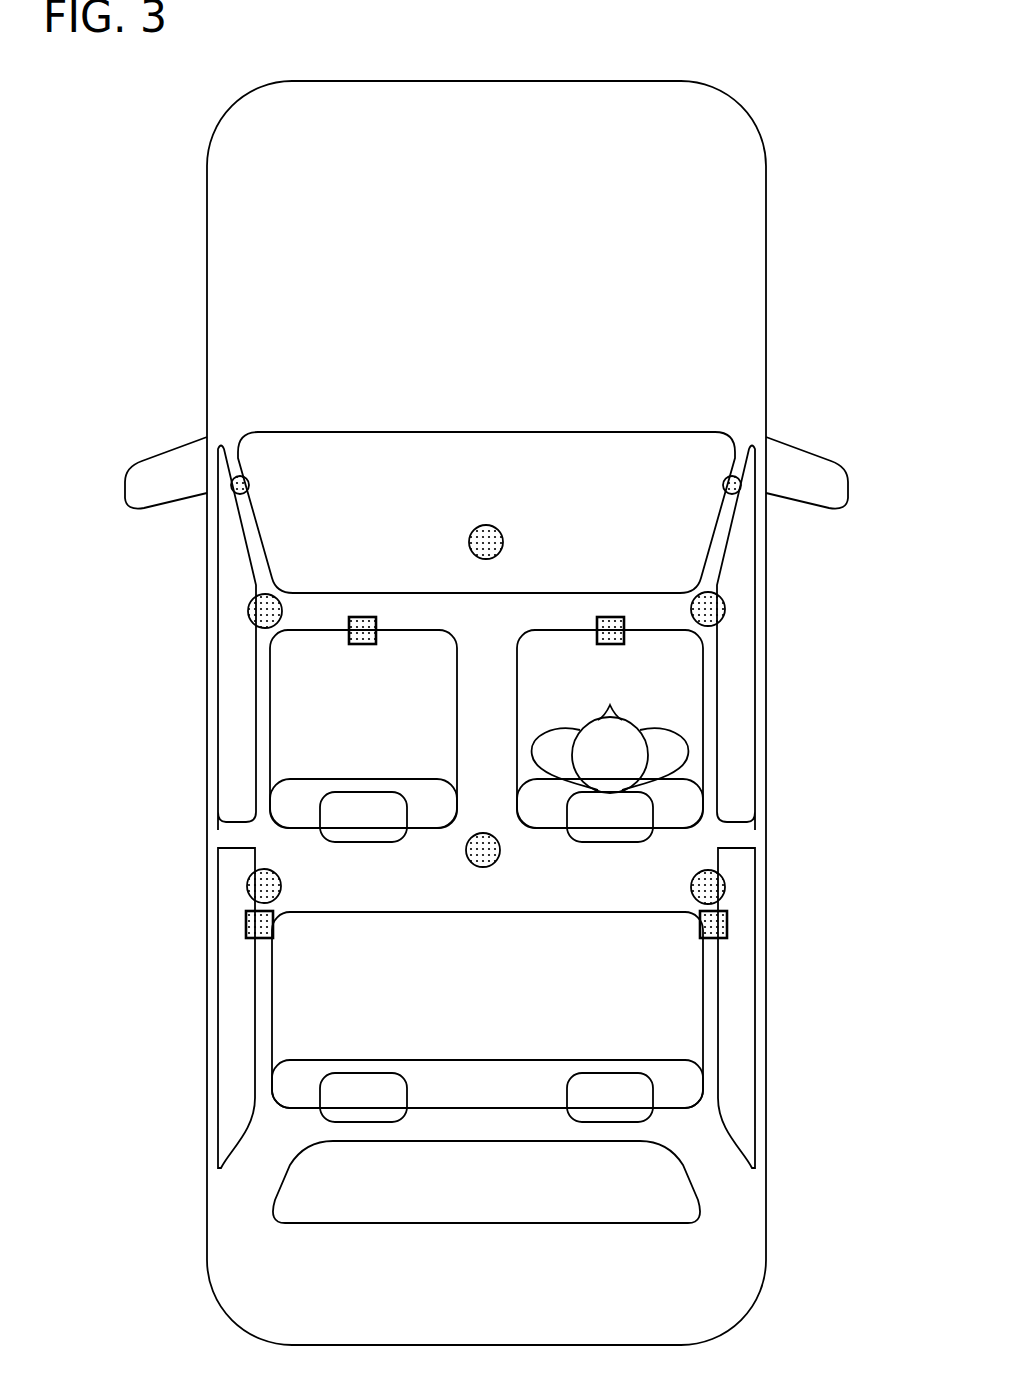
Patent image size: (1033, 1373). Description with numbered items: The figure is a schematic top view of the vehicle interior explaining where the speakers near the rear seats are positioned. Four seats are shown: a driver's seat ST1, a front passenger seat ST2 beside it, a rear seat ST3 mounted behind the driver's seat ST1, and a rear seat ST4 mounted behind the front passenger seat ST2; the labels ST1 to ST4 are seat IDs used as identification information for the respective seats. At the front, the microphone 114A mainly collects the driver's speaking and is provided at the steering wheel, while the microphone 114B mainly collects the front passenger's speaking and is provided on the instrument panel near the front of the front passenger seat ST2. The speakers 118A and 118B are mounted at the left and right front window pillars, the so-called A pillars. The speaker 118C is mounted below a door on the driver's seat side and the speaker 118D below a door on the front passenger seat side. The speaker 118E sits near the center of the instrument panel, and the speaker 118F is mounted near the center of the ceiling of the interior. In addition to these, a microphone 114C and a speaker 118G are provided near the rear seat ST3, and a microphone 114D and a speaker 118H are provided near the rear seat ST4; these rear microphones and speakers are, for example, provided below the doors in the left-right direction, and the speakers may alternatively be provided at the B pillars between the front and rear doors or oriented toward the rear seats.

The microphone 114A is at (604, 617).
The microphone 114B is at (362, 617).
The microphone 114C is at (728, 922).
The microphone 114D is at (246, 920).
The speaker 118A is at (724, 484).
The speaker 118B is at (247, 476).
The speaker 118C is at (725, 604).
The speaker 118D is at (248, 612).
The speaker 118E is at (486, 525).
The speaker 118F is at (500, 850).
The speaker 118G is at (725, 884).
The speaker 118H is at (247, 886).
The driver's seat ST1 is at (637, 689).
The front passenger seat ST2 is at (390, 689).
The rear seat ST3 is at (637, 1001).
The rear seat ST4 is at (390, 1001).